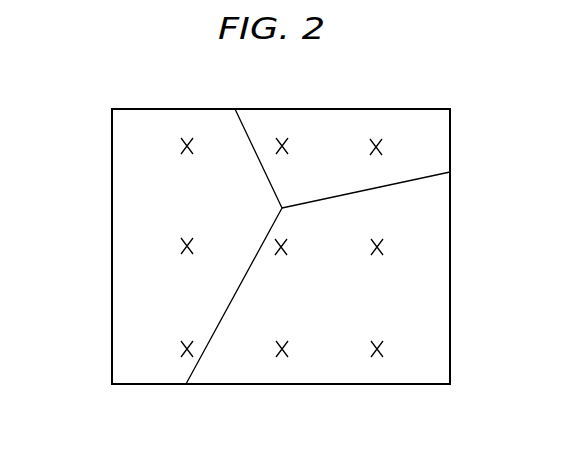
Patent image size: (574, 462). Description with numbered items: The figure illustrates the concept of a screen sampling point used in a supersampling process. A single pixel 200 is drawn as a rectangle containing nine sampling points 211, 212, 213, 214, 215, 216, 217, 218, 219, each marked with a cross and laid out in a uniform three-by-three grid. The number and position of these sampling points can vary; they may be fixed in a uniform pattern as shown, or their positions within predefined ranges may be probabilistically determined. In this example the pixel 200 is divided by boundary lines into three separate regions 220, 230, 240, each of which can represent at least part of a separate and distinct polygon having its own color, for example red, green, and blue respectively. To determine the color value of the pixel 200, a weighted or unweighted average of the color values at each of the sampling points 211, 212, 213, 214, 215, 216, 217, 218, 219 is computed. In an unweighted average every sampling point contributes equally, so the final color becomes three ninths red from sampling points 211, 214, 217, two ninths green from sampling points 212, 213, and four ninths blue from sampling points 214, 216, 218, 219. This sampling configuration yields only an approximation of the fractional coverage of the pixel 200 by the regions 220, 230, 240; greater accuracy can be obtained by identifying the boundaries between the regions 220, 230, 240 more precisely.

The pixel 200 is at (402, 74).
The sampling point 211 is at (185, 140).
The sampling point 212 is at (280, 140).
The sampling point 213 is at (374, 141).
The sampling point 214 is at (183, 246).
The sampling point 215 is at (286, 251).
The sampling point 216 is at (381, 246).
The sampling point 217 is at (186, 356).
The sampling point 218 is at (282, 356).
The sampling point 219 is at (378, 356).
The region 220 is at (224, 213).
The region 230 is at (342, 177).
The region 240 is at (426, 320).